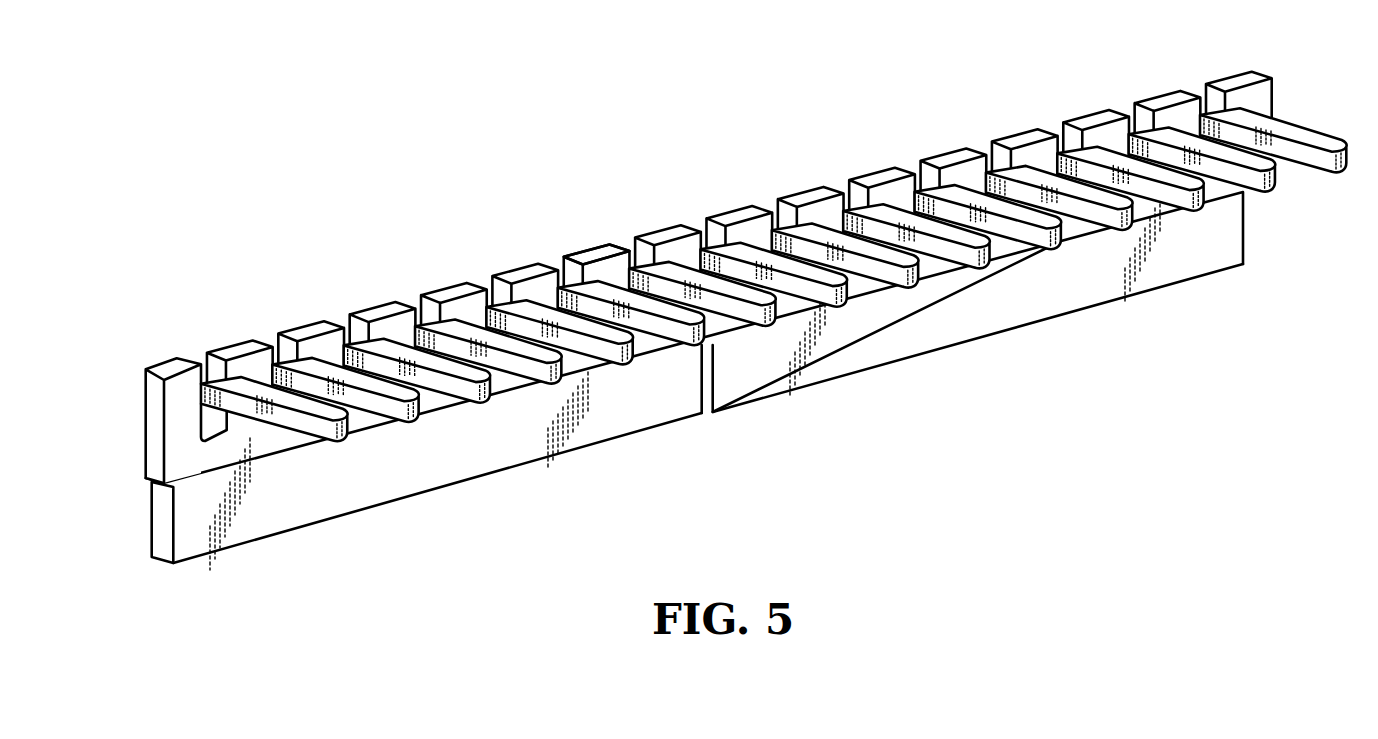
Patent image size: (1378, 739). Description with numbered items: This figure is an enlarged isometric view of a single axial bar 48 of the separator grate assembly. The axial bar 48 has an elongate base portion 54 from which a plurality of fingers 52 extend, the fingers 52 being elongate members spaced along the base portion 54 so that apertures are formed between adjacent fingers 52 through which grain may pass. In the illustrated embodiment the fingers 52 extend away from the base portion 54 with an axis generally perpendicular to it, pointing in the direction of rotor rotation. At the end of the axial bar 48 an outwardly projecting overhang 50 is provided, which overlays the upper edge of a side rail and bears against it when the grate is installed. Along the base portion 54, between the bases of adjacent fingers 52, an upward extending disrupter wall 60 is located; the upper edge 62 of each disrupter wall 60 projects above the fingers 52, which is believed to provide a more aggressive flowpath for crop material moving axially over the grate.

The axial bar 48 is at (1085, 310).
The overhang 50 is at (146, 462).
The finger 52 is at (316, 440).
The base portion 54 is at (636, 435).
The disrupter wall 60 is at (376, 307).
The upper edge 62 is at (591, 260).